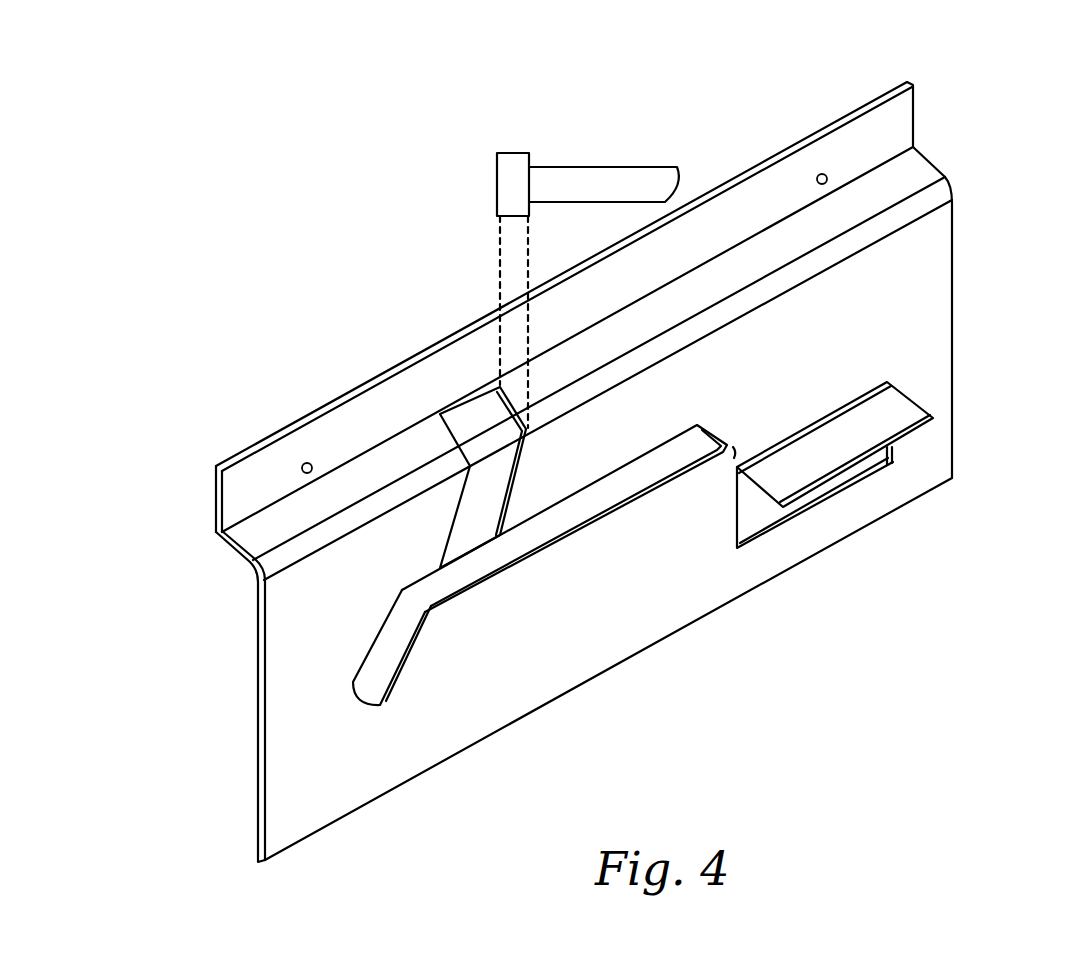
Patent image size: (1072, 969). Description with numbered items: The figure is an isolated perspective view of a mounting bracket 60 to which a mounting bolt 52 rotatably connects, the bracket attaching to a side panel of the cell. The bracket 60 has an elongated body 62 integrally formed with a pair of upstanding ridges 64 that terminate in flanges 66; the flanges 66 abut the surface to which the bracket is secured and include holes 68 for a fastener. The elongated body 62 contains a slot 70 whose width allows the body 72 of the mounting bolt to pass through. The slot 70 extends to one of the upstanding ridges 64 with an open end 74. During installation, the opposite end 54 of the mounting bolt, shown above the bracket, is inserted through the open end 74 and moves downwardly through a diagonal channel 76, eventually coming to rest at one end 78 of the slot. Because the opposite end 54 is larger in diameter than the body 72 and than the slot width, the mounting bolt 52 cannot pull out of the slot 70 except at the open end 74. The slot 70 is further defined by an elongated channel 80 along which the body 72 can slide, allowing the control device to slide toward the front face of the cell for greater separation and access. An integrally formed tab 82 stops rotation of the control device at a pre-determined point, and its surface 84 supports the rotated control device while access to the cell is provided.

The mounting bolt 52 is at (576, 256).
The opposite end of the mounting bolt 54 is at (512, 160).
The mounting bracket 60 is at (616, 469).
The elongated body 62 is at (903, 288).
The upstanding ridges 64 is at (878, 193).
The flanges 66 is at (878, 137).
The holes 68 is at (303, 463).
The slot 70 is at (461, 579).
The body of the mounting bolt 72 is at (630, 180).
The open end 74 is at (470, 432).
The diagonal channel 76 is at (461, 597).
The end of the slot 78 is at (362, 690).
The elongated channel 80 is at (647, 468).
The tab 82 is at (937, 420).
The surface of the tab 84 is at (848, 440).